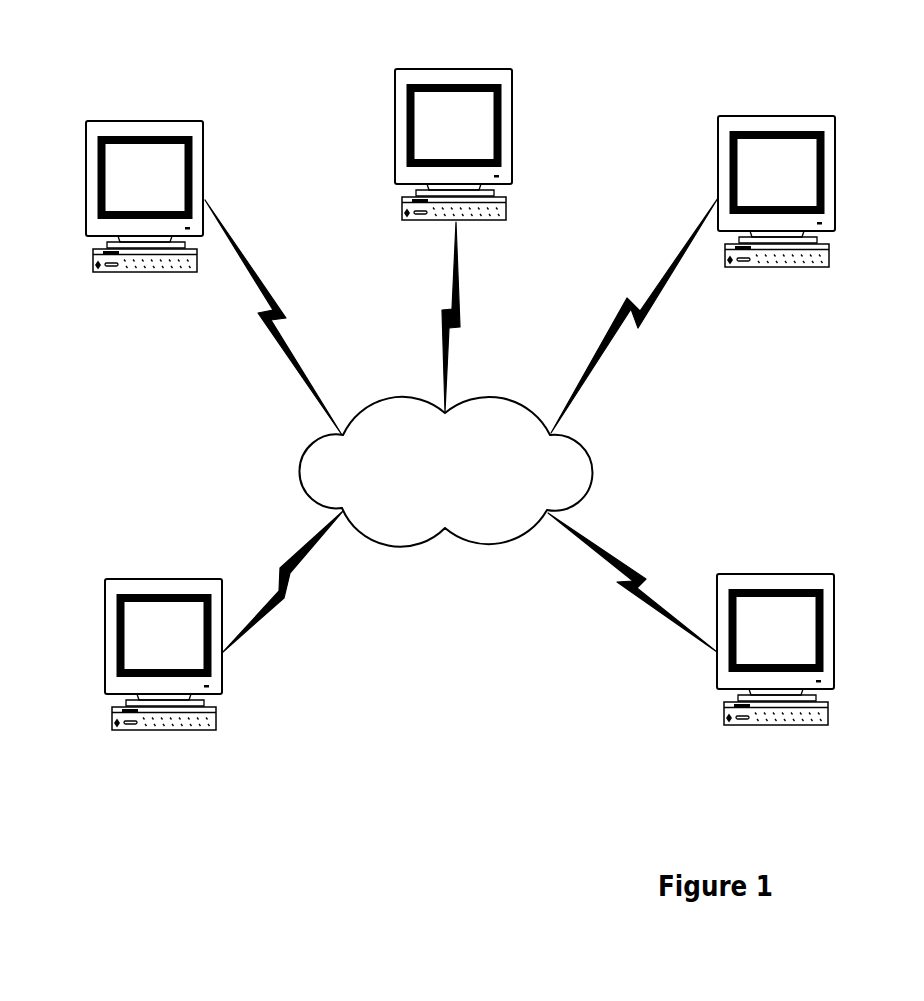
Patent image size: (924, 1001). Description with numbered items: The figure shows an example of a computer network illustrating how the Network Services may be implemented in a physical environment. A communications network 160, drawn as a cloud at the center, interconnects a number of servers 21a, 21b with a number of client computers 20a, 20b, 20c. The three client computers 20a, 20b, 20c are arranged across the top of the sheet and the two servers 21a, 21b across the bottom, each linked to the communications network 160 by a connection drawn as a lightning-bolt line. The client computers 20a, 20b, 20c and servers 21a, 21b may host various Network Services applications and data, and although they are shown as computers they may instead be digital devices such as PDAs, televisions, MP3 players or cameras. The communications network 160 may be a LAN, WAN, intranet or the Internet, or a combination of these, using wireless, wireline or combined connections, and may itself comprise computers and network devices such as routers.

The client computer 20a is at (143, 120).
The client computer 20b is at (456, 68).
The client computer 20c is at (777, 116).
The server 21a is at (148, 578).
The server 21b is at (815, 574).
The communications network 160 is at (490, 547).